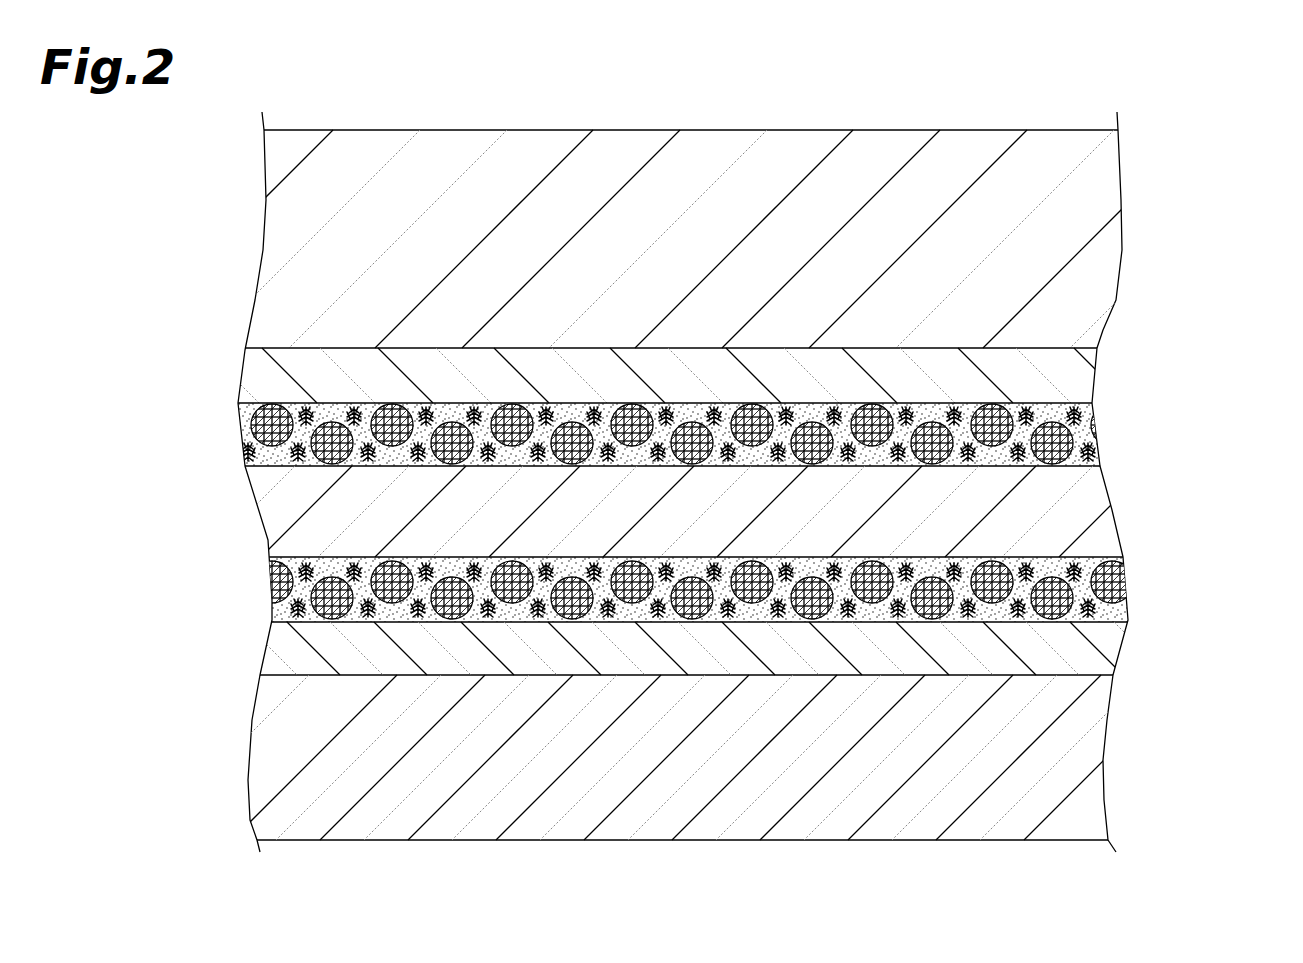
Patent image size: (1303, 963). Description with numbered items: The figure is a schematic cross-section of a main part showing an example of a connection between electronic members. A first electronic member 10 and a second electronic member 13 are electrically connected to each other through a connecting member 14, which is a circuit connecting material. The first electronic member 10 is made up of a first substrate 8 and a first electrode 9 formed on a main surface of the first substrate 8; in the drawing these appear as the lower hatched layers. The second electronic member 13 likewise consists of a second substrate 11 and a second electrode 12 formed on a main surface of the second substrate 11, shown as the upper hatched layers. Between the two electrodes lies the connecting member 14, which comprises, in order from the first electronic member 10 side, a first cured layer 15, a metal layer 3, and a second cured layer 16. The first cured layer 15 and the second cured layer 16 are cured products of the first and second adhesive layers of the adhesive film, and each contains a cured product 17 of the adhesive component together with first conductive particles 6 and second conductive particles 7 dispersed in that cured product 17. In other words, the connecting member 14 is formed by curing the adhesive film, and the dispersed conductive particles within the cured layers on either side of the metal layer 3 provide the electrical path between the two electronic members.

The metal layer 3 is at (1092, 522).
The first conductive particles 6 is at (905, 408).
The second conductive particles 7 is at (268, 432).
The first substrate 8 is at (666, 757).
The first electrode 9 is at (1095, 655).
The first electronic member 10 is at (689, 731).
The second substrate 11 is at (1073, 282).
The second electrode 12 is at (692, 375).
The second electronic member 13 is at (701, 266).
The connecting member 14 is at (742, 485).
The first cured layer 15 is at (1181, 533).
The second cured layer 16 is at (1181, 400).
The cured product 17 is at (1000, 479).